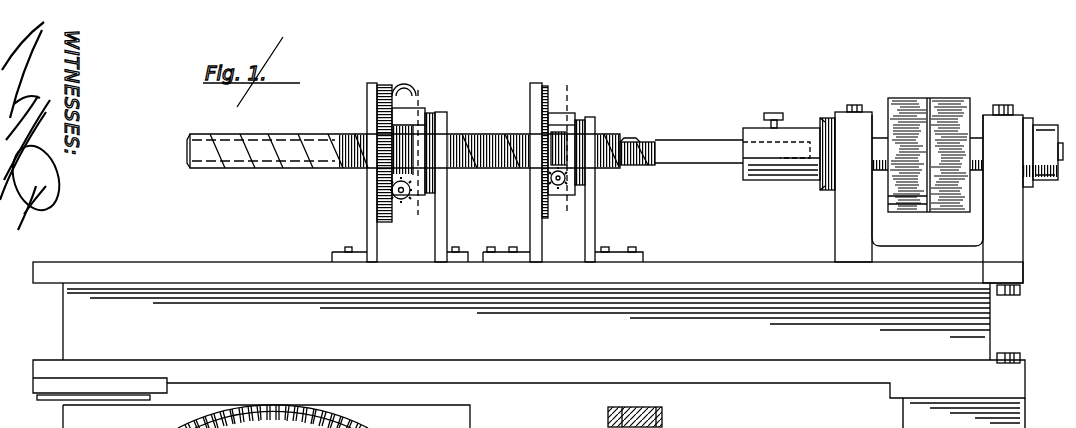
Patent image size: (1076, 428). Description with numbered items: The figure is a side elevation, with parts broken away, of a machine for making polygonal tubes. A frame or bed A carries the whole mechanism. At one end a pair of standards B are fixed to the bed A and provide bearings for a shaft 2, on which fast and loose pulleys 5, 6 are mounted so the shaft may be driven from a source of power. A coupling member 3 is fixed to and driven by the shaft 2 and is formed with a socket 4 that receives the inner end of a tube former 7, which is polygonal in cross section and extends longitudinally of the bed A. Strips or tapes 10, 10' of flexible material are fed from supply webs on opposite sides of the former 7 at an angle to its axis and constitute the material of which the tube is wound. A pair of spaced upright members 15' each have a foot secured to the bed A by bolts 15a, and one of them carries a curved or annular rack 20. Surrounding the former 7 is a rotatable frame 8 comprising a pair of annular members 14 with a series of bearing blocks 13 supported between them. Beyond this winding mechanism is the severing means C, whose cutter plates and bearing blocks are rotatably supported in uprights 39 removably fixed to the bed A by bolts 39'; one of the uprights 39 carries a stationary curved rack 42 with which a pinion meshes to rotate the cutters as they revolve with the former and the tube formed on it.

The shaft 2 is at (878, 138).
The coupling member 3 is at (818, 96).
The socket 4 is at (790, 140).
The fast pulley 5 is at (902, 211).
The loose pulley 6 is at (953, 105).
The tube former 7 is at (667, 141).
The rotatable frame 8 is at (556, 121).
The strip or tape 10 is at (657, 167).
The strip or tape 10' is at (635, 122).
The bearing blocks 13 is at (412, 153).
The annular members 14 is at (576, 114).
The upright members 15' is at (506, 255).
The bolts 15a is at (498, 251).
The curved rack 20 is at (545, 87).
The uprights 39 is at (404, 172).
The bolts 39' is at (384, 229).
The stationary curved rack 42 is at (393, 93).
The frame or bed A is at (529, 331).
The standards B is at (848, 215).
The severing means C is at (403, 172).